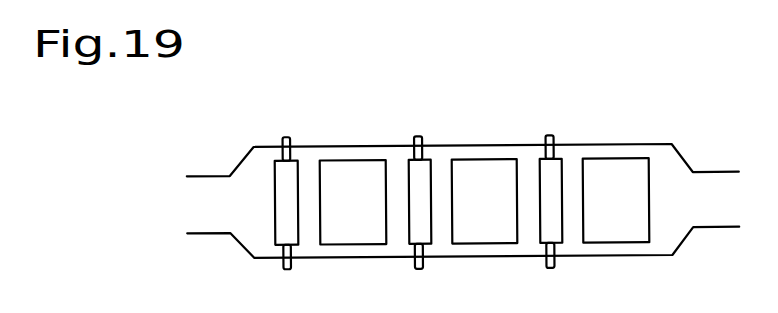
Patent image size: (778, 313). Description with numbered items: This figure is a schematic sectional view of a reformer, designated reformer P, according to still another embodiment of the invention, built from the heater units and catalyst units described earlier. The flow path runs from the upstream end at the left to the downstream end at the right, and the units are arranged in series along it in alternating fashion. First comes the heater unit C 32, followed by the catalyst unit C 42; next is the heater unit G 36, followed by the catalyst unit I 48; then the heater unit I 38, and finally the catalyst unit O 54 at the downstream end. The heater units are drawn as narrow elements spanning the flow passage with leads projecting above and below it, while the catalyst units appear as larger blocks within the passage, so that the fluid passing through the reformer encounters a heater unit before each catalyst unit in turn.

The heater unit C 32 is at (276, 156).
The catalyst unit C 42 is at (353, 160).
The heater unit G 36 is at (409, 153).
The catalyst unit I 48 is at (484, 160).
The heater unit I 38 is at (543, 153).
The catalyst unit O 54 is at (618, 159).